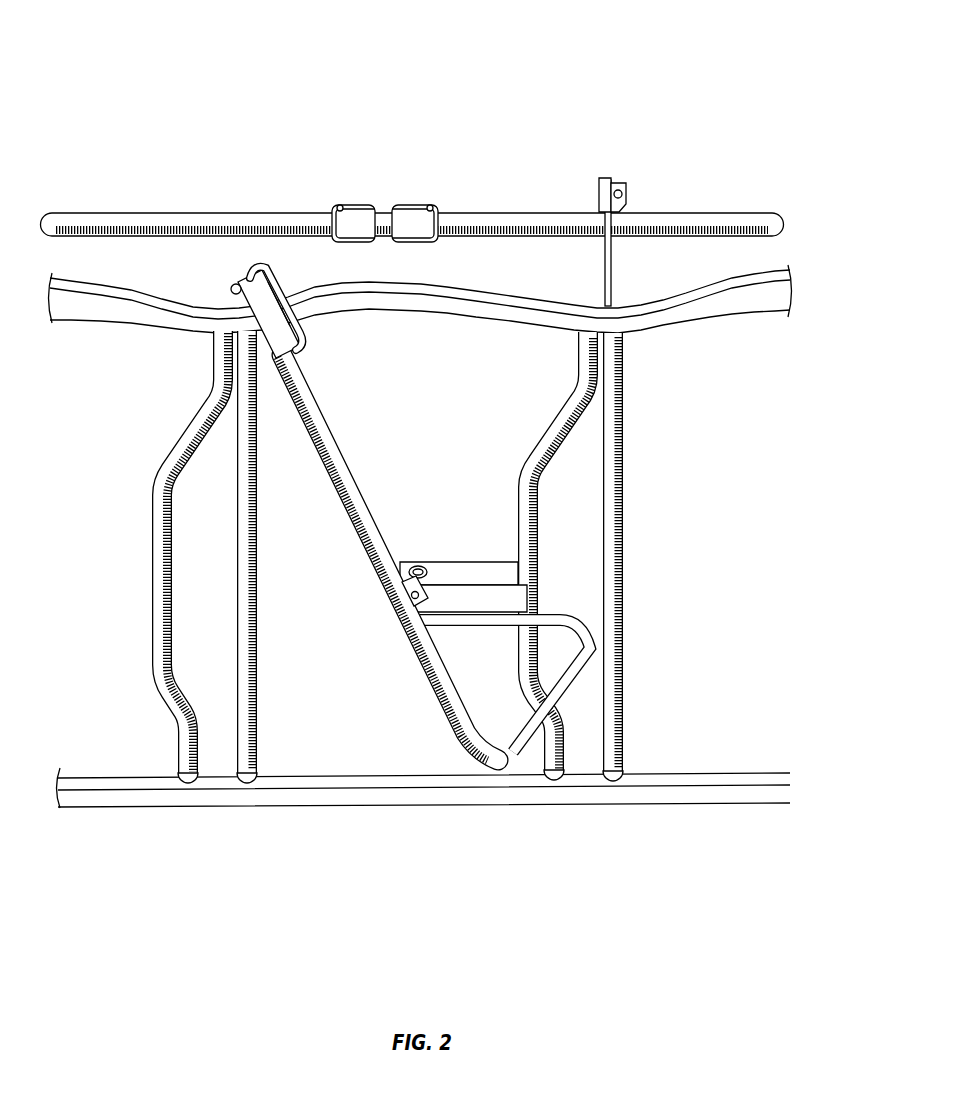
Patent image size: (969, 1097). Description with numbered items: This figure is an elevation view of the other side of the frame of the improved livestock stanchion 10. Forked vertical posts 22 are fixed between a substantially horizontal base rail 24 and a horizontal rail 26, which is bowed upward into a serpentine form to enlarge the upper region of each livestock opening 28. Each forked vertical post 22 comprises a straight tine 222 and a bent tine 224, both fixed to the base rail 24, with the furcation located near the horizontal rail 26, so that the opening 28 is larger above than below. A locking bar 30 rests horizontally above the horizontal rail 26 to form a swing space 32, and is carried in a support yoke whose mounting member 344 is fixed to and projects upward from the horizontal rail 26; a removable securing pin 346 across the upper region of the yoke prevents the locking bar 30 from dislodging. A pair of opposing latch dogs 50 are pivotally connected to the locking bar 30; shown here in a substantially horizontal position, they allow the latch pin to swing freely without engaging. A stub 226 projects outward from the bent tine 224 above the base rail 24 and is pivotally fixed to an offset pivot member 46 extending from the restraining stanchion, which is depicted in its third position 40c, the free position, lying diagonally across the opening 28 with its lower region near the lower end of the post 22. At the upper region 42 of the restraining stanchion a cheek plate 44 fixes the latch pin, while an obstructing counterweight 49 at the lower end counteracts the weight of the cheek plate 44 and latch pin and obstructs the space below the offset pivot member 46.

The livestock stanchion 10 is at (172, 54).
The forked vertical post 22 is at (598, 340).
The base rail 24 is at (400, 792).
The horizontal rail 26 is at (470, 300).
The livestock opening 28 is at (454, 388).
The locking bar 30 is at (214, 214).
The swing space 32 is at (430, 270).
The third position 40c is at (312, 387).
The upper region 42 is at (293, 341).
The cheek plate 44 is at (258, 300).
The offset pivot member 46 is at (401, 601).
The obstructing counterweight 49 is at (588, 650).
The latch dogs 50 is at (414, 207).
The straight tine 222 is at (232, 355).
The bent tine 224 is at (157, 578).
The stub 226 is at (468, 562).
The mounting member 344 is at (614, 286).
The securing pin 346 is at (627, 192).